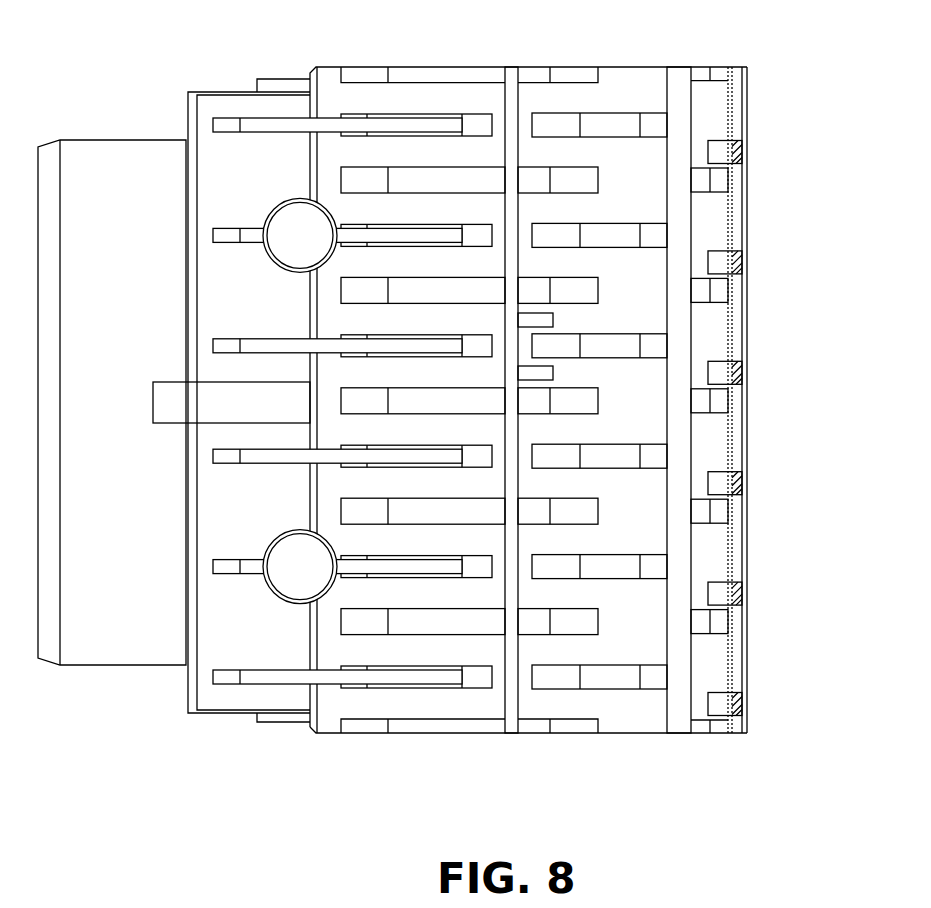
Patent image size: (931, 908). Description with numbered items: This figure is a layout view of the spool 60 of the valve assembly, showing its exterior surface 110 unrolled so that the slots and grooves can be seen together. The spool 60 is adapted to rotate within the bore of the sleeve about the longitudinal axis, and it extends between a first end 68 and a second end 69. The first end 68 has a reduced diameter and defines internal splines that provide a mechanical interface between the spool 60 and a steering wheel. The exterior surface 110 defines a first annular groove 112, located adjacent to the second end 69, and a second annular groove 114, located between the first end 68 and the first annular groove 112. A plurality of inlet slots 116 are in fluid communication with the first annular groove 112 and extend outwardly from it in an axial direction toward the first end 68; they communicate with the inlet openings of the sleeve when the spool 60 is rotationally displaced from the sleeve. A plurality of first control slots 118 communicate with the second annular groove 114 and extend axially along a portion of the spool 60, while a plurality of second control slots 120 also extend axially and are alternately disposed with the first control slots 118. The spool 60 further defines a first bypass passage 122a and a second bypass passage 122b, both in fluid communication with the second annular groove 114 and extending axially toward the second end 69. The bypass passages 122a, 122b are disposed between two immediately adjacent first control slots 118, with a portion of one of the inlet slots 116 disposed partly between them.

The spool 60 is at (192, 73).
The first end 68 is at (107, 666).
The second end 69 is at (730, 67).
The exterior surface 110 is at (441, 491).
The first annular groove 112 is at (680, 67).
The second annular groove 114 is at (515, 722).
The inlet slots 116 is at (618, 347).
The first control slots 118 is at (410, 306).
The second control slots 120 is at (410, 359).
The first bypass passage 122a is at (550, 373).
The second bypass passage 122b is at (550, 320).